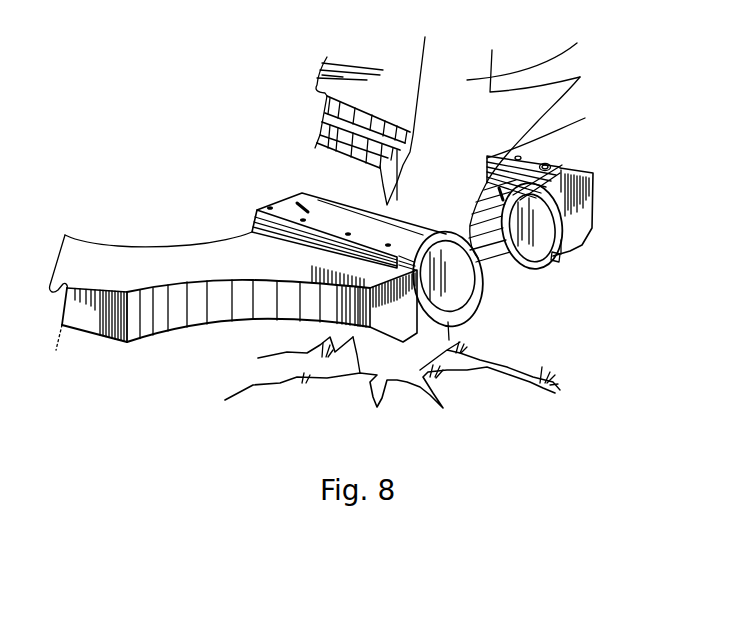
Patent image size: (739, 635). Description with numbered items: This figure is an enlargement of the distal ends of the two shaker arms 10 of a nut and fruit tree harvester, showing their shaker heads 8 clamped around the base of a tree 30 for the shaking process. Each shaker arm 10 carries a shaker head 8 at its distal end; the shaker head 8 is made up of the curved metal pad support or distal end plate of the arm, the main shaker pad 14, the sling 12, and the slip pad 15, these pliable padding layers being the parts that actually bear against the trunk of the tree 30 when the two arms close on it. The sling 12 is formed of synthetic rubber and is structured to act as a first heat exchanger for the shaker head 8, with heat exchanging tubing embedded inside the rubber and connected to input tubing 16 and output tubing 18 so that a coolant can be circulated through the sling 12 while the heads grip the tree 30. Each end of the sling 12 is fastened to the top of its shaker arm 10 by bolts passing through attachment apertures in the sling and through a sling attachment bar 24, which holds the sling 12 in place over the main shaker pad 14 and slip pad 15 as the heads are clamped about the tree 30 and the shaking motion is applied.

The shaker head 8 is at (297, 203).
The shaker arm 10 is at (198, 265).
The sling 12 is at (560, 217).
The main shaker pad 14 is at (453, 283).
The slip pad 15 is at (558, 265).
The input tubing 16 is at (325, 102).
The output tubing 18 is at (323, 115).
The sling attachment bar 24 is at (260, 206).
The tree 30 is at (492, 50).